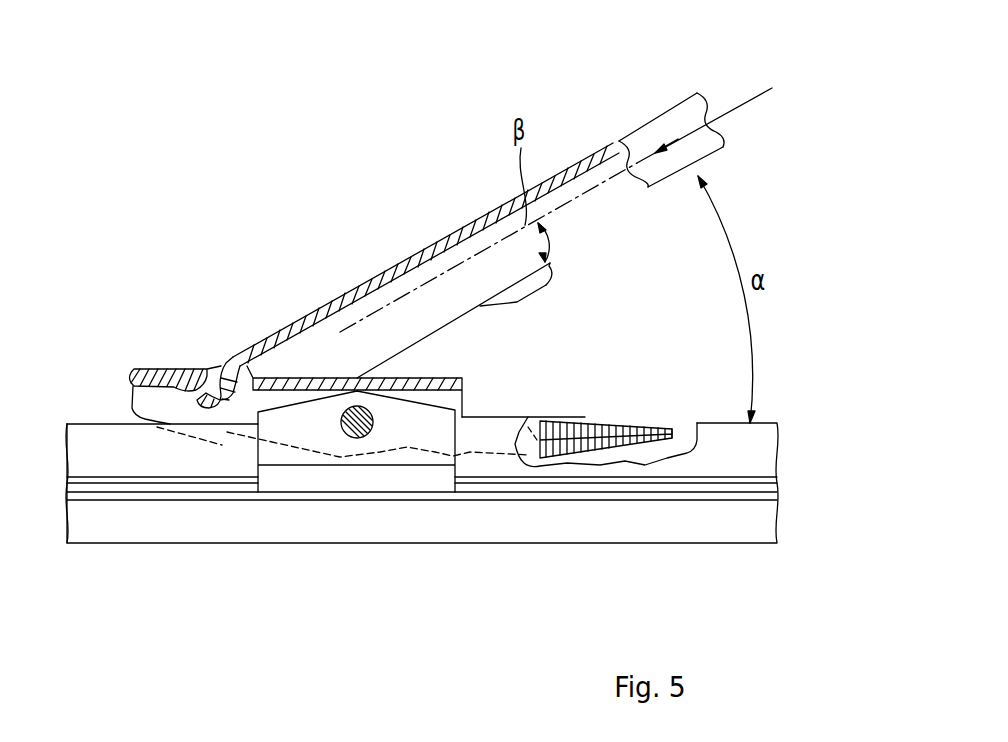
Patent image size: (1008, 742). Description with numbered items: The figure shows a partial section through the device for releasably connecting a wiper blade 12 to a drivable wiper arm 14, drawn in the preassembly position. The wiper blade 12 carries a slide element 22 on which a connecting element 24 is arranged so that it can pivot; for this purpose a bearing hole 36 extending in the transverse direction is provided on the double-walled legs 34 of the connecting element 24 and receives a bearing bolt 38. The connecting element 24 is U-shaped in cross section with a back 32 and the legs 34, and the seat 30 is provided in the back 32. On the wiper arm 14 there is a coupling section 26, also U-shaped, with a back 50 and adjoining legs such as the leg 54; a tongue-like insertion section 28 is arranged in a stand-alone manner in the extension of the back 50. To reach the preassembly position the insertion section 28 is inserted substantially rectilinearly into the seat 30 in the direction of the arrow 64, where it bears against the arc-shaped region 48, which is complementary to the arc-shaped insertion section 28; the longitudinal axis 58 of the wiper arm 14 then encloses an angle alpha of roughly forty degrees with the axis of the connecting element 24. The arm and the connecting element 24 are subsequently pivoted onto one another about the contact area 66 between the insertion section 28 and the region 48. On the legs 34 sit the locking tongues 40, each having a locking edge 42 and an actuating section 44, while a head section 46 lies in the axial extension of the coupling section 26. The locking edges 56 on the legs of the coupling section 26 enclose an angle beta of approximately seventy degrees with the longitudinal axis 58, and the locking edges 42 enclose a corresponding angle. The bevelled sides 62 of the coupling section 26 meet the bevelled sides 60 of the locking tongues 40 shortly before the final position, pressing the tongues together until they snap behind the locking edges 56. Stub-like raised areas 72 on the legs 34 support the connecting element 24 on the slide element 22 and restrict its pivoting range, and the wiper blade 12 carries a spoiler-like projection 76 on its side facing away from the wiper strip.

The wiper blade 12 is at (683, 546).
The wiper arm 14 is at (667, 108).
The slide element 22 is at (298, 477).
The connecting element 24 is at (442, 372).
The coupling section 26 is at (300, 294).
The insertion section 28 is at (210, 367).
The seat 30 is at (218, 369).
The back 32 is at (450, 377).
The legs 34 is at (242, 410).
The bearing hole 36 is at (356, 447).
The bearing bolt 38 is at (347, 442).
The locking tongue 40 is at (588, 414).
The locking edge 42 is at (533, 445).
The actuating section 44 is at (630, 424).
The head section 46 is at (152, 368).
The region 48 is at (177, 389).
The back 50 is at (347, 292).
The leg 54 is at (426, 272).
The locking edge 56 is at (551, 266).
The longitudinal axis 58 is at (470, 257).
The side 60 is at (547, 418).
The side 62 is at (552, 287).
The arrow 64 is at (748, 100).
The contact area 66 is at (187, 399).
The raised areas 72 is at (448, 457).
The spoiler-like projection 76 is at (85, 437).